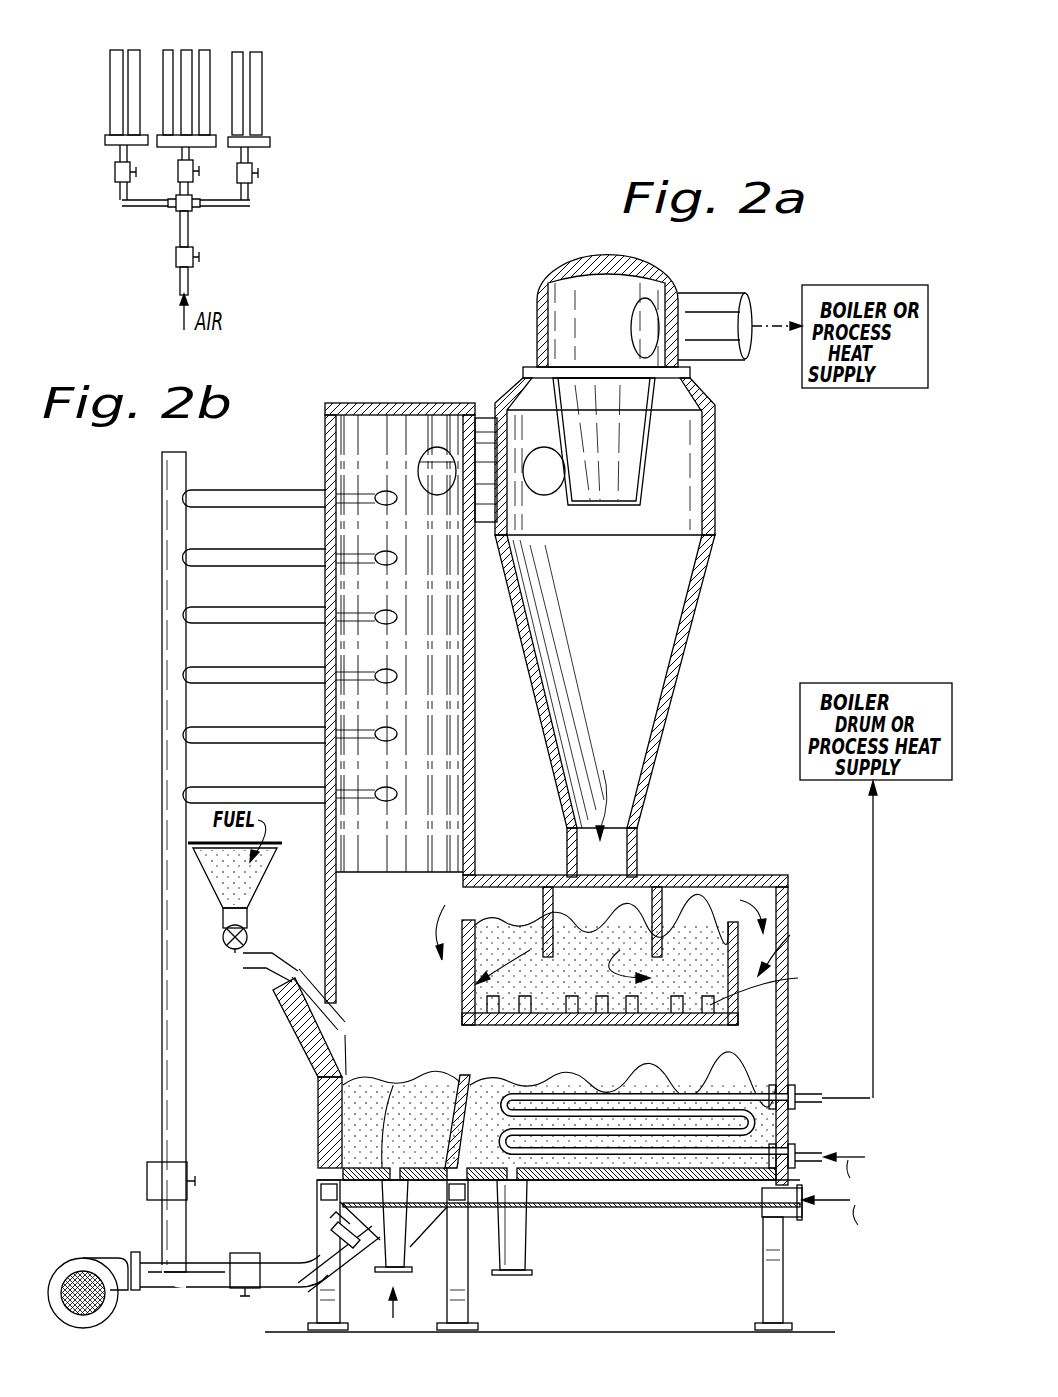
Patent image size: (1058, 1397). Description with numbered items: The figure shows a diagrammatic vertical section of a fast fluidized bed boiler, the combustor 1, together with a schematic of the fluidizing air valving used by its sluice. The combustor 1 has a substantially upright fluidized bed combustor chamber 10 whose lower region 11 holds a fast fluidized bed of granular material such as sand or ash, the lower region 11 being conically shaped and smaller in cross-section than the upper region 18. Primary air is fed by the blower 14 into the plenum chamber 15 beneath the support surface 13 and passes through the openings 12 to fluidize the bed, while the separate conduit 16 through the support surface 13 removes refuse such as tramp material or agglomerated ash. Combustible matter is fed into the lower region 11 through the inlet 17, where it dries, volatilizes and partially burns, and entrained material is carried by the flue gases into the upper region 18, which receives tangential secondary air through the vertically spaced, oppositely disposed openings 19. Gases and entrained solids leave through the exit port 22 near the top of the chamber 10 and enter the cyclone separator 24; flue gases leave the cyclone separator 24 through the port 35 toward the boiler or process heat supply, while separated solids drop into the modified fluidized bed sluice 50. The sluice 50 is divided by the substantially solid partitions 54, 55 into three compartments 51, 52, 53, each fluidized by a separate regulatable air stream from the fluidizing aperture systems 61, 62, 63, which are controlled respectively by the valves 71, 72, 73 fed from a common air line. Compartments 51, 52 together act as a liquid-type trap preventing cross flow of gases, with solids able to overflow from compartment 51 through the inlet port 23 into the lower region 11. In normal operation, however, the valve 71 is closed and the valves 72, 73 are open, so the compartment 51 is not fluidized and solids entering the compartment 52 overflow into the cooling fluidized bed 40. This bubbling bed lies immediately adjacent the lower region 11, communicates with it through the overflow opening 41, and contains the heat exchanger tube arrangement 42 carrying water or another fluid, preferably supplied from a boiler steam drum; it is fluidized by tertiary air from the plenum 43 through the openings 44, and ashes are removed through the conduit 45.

In FIG. 2a, the combustor 1 is at (444, 300).
In FIG. 2a, the fluidized bed combustor chamber 10 is at (478, 768).
In FIG. 2a, the lower region 11 is at (360, 1112).
In FIG. 2a, the openings 12 is at (343, 1152).
In FIG. 2a, the support surface 13 is at (393, 1086).
In FIG. 2a, the blower 14 is at (118, 1296).
In FIG. 2a, the plenum chamber 15 is at (375, 1242).
In FIG. 2a, the conduit 16 is at (408, 1265).
In FIG. 2a, the inlet 17 is at (318, 1032).
In FIG. 2a, the upper region 18 is at (436, 716).
In FIG. 2a, the openings 19 is at (378, 556).
In FIG. 2a, the exit port 22 is at (437, 466).
In FIG. 2a, the inlet port 23 is at (458, 923).
In FIG. 2a, the cyclone separator 24 is at (668, 745).
In FIG. 2a, the port 35 is at (643, 300).
In FIG. 2a, the cooling fluidized bed 40 is at (790, 1080).
In FIG. 2a, the overflow opening 41 is at (461, 1103).
In FIG. 2a, the heat exchanger tube arrangement 42 is at (740, 1140).
In FIG. 2a, the plenum 43 is at (765, 1217).
In FIG. 2a, the openings 44 is at (572, 1210).
In FIG. 2a, the conduit 45 is at (530, 1248).
In FIG. 2a, the modified fluidized bed sluice 50 is at (750, 970).
In FIG. 2a, the compartment 51 is at (503, 935).
In FIG. 2a, the compartment 52 is at (619, 935).
In FIG. 2a, the compartment 53 is at (694, 901).
In FIG. 2a, the partition 54 is at (556, 880).
In FIG. 2a, the partition 55 is at (672, 880).
In FIG. 2b, the fluidizing aperture system 61 is at (134, 55).
In FIG. 2a, the fluidizing aperture system 61 is at (525, 1026).
In FIG. 2b, the fluidizing aperture system 62 is at (205, 55).
In FIG. 2a, the fluidizing aperture system 62 is at (630, 1028).
In FIG. 2b, the fluidizing aperture system 63 is at (256, 57).
In FIG. 2a, the fluidizing aperture system 63 is at (708, 1026).
In FIG. 2b, the valve 71 is at (122, 196).
In FIG. 2b, the valve 72 is at (180, 205).
In FIG. 2b, the valve 73 is at (248, 196).